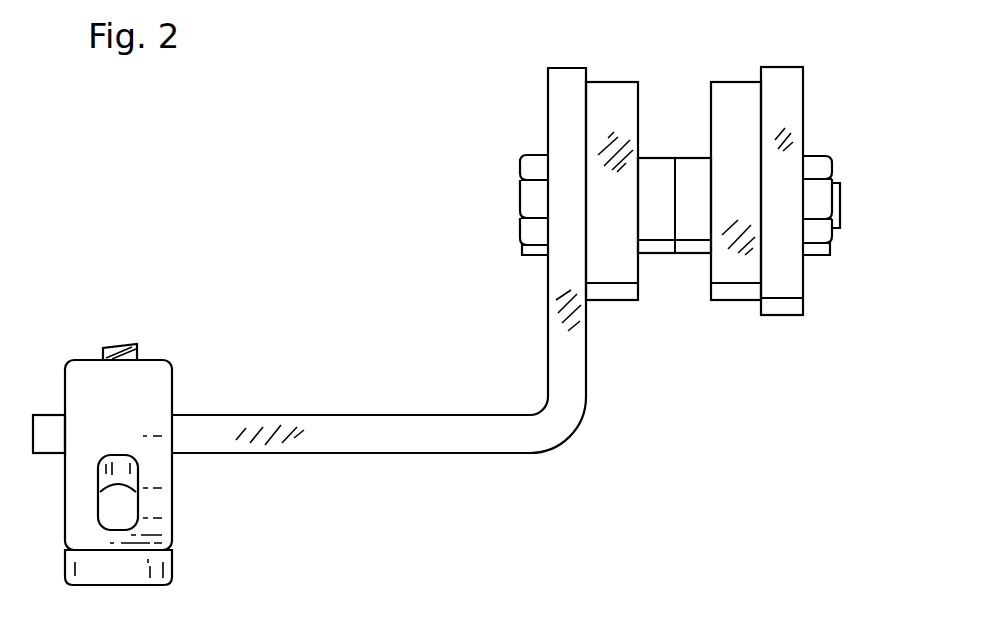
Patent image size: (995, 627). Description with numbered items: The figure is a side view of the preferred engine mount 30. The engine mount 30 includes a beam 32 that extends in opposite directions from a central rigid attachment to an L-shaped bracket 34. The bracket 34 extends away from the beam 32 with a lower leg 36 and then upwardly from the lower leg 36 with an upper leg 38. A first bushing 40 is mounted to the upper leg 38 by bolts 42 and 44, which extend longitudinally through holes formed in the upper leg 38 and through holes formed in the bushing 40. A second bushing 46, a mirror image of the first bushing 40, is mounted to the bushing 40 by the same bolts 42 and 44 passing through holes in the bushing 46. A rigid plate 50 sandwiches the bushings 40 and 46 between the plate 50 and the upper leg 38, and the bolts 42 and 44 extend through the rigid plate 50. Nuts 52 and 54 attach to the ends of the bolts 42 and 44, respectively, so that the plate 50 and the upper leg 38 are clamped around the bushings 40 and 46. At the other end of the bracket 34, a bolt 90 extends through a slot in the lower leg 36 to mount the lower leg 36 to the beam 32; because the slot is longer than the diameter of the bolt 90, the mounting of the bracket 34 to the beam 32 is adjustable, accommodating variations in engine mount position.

The engine mount 30 is at (378, 223).
The beam 32 is at (80, 365).
The L-shaped bracket 34 is at (484, 411).
The lower leg 36 is at (471, 443).
The upper leg 38 is at (586, 348).
The first bushing 40 is at (608, 86).
The bolt 42 is at (533, 251).
The bolt 44 is at (528, 170).
The second bushing 46 is at (724, 88).
The rigid plate 50 is at (783, 72).
The nut 52 is at (820, 256).
The nut 54 is at (814, 163).
The bolt 90 is at (117, 345).